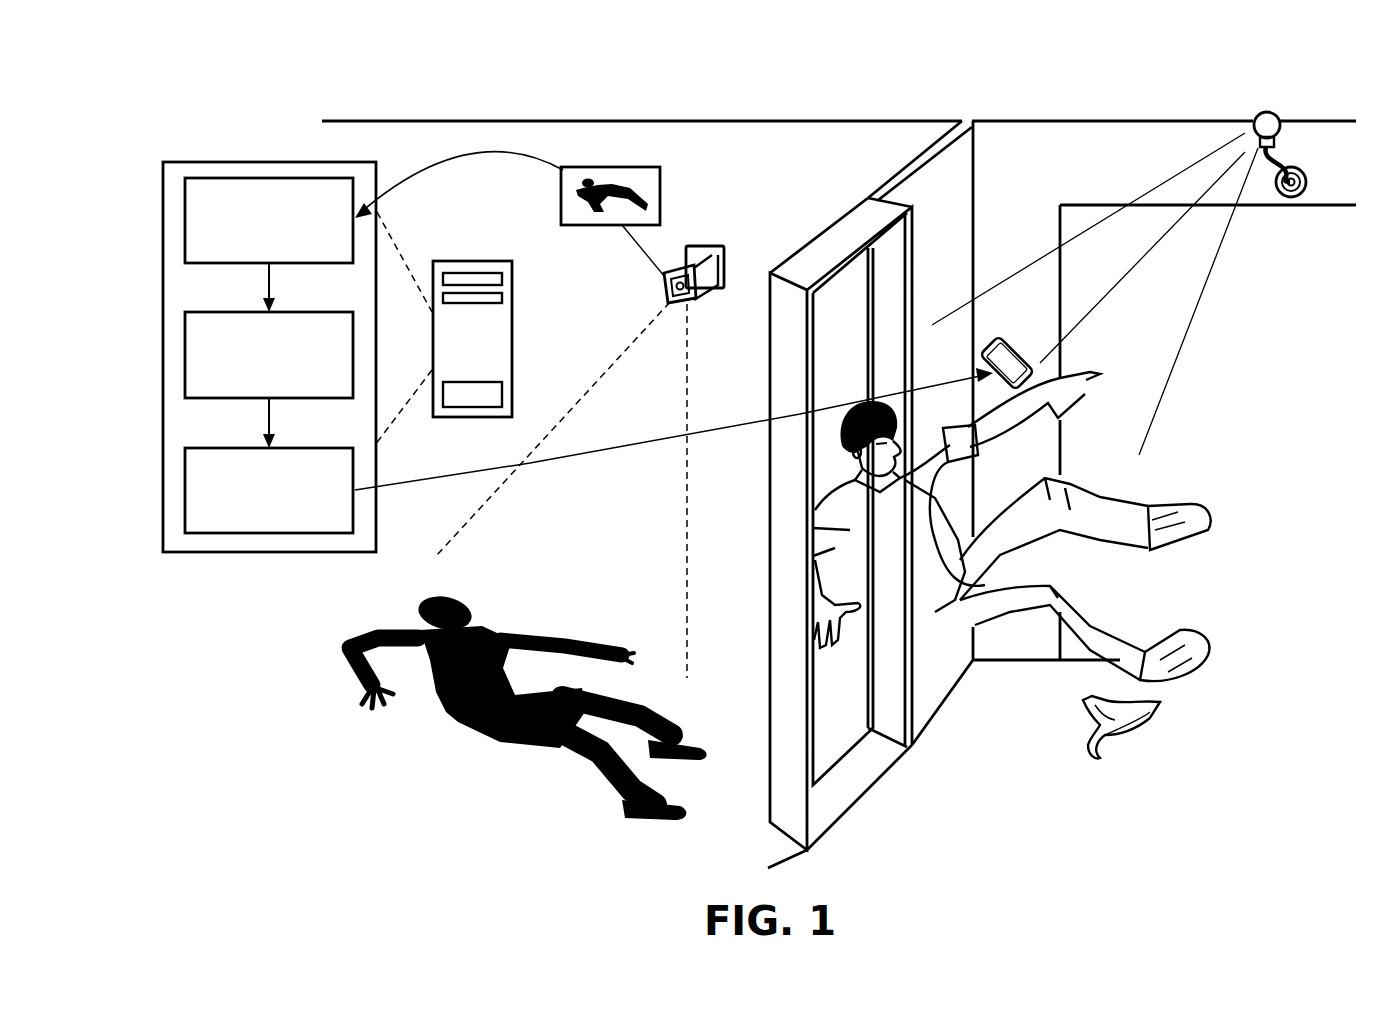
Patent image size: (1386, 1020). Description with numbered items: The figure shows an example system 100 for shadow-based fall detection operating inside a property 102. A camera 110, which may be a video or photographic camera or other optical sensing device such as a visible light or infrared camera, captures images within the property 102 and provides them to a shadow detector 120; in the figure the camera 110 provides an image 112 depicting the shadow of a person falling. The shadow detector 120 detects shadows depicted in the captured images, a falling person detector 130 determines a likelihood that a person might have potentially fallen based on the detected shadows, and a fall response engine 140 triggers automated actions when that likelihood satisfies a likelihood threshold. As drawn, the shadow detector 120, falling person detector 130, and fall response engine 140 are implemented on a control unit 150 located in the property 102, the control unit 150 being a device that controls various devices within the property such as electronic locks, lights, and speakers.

The system 100 is at (236, 50).
The property 102 is at (640, 121).
The camera 110 is at (716, 246).
The image 112 is at (661, 196).
The shadow detector 120 is at (269, 220).
The falling person detector 130 is at (269, 355).
The fall response engine 140 is at (269, 490).
The control unit 150 is at (512, 334).